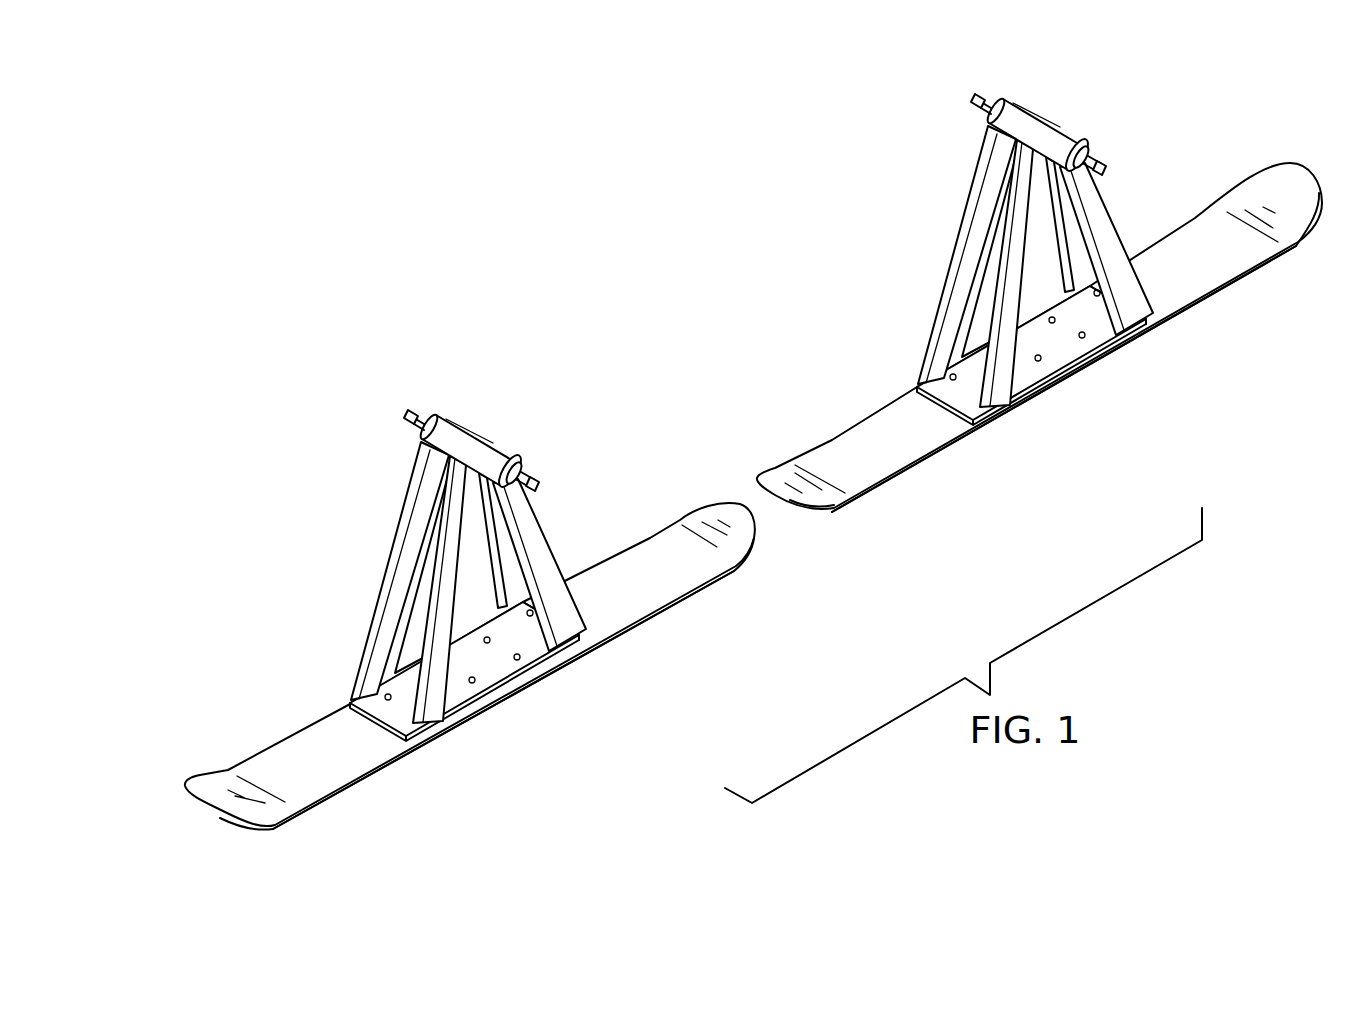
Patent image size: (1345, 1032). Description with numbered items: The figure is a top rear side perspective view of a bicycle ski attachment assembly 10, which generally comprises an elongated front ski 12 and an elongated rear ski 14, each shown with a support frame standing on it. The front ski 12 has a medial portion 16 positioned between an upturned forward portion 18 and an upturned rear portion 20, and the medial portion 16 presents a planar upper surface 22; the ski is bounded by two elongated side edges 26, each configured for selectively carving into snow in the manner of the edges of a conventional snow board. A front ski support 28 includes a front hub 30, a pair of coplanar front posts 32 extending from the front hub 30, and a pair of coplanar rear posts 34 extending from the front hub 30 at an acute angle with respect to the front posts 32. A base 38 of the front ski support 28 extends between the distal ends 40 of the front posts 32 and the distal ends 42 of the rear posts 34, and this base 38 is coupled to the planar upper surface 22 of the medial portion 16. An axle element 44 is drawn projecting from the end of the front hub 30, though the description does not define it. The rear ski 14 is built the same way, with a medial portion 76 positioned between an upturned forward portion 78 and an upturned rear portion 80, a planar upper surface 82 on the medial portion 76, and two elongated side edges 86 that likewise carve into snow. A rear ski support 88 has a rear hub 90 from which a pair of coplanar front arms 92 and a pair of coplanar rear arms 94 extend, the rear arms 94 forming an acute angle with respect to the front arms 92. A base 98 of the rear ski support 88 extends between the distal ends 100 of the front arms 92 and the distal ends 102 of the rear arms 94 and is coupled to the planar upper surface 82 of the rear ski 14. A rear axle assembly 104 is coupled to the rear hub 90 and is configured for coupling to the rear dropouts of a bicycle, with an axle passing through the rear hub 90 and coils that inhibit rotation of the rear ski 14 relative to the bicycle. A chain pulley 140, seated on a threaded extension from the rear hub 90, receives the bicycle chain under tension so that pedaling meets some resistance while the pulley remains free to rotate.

The bicycle ski attachment assembly 10 is at (686, 215).
The front ski 12 is at (1200, 283).
The rear ski 14 is at (673, 583).
The medial portion 16 is at (1075, 392).
The upturned forward portion 18 is at (1272, 178).
The upturned rear portion 20 is at (800, 514).
The planar upper surface 22 is at (615, 593).
The elongated side edges 26 is at (1180, 227).
The front ski support 28 is at (950, 231).
The front hub 30 is at (1050, 127).
The front posts 32 is at (1100, 207).
The rear posts 34 is at (1000, 307).
The base 38 is at (1025, 362).
The distal ends of the front posts 40 is at (1138, 313).
The distal ends of the rear posts 42 is at (992, 400).
The bolt of pivot tube 44 is at (958, 93).
The medial portion 76 is at (503, 727).
The upturned forward portion 78 is at (705, 510).
The upturned rear portion 80 is at (215, 802).
The planar upper surface 82 is at (884, 448).
The elongated side edges 86 is at (610, 558).
The rear ski support 88 is at (382, 558).
The rear hub 90 is at (473, 443).
The front arms 92 is at (540, 537).
The rear arms 94 is at (433, 632).
The base 98 is at (462, 667).
The distal ends of the front arms 100 is at (542, 663).
The distal ends of the rear arms 102 is at (428, 712).
The rear axle assembly 104 is at (408, 398).
The chain pulley 140 is at (507, 450).